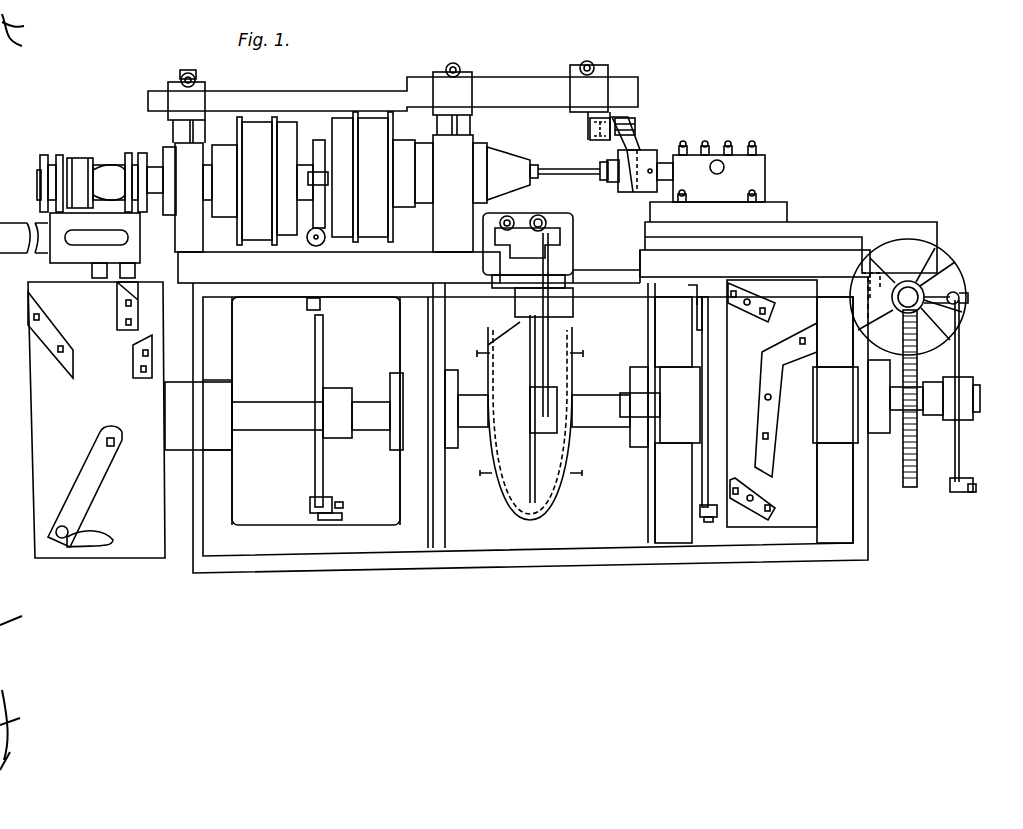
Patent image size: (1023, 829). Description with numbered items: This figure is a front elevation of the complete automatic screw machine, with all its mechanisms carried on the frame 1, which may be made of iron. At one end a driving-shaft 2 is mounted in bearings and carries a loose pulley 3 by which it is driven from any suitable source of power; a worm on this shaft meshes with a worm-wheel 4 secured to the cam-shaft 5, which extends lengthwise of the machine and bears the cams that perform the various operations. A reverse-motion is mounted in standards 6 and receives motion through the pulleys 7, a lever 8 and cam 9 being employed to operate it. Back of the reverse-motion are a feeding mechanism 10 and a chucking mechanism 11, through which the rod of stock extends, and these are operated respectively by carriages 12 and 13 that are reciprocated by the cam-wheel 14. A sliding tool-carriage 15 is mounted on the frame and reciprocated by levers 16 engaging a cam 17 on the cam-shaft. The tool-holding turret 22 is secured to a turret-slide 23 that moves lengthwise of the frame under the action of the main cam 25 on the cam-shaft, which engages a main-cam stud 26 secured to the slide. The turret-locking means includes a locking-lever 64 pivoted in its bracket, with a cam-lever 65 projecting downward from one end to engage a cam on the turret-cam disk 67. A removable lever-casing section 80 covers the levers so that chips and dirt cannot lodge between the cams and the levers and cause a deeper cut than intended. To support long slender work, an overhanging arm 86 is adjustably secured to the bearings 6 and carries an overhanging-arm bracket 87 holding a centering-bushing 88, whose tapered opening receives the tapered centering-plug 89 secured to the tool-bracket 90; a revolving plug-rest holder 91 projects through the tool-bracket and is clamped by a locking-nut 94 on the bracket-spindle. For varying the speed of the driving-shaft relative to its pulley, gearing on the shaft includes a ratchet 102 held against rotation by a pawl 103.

The frame 1 is at (196, 563).
The driving-shaft 2 is at (962, 300).
The pulley 3 is at (962, 278).
The worm-wheel 4 is at (915, 480).
The cam-shaft 5 is at (980, 395).
The standards 6 is at (176, 148).
The pulleys 7 is at (252, 120).
The lever 8 is at (306, 305).
The cam 9 is at (330, 505).
The feeding mechanism 10 is at (50, 170).
The chucking mechanism 11 is at (115, 170).
The carriage 12 is at (50, 222).
The carriage 13 is at (57, 255).
The cam-wheel 14 is at (42, 295).
The sliding tool-carriage 15 is at (600, 193).
The levers 16 is at (548, 340).
The cam 17 is at (530, 492).
The turret 22 is at (733, 171).
The turret-slide 23 is at (791, 237).
The main cam 25 is at (777, 400).
The main-cam stud 26 is at (800, 278).
The locking-lever 64 is at (697, 272).
The cam-lever 65 is at (697, 306).
The turret-cam disk 67 is at (702, 336).
The lever-casing section 80 is at (522, 366).
The overhanging arm 86 is at (497, 90).
The overhanging-arm bracket 87 is at (575, 74).
The centering-bushing 88 is at (591, 130).
The centering-plug 89 is at (636, 126).
The tool-bracket 90 is at (625, 152).
The revolving plug-rest holder 91 is at (655, 160).
The locking-nut 94 is at (648, 192).
The ratchet 102 is at (962, 325).
The pawl 103 is at (945, 282).